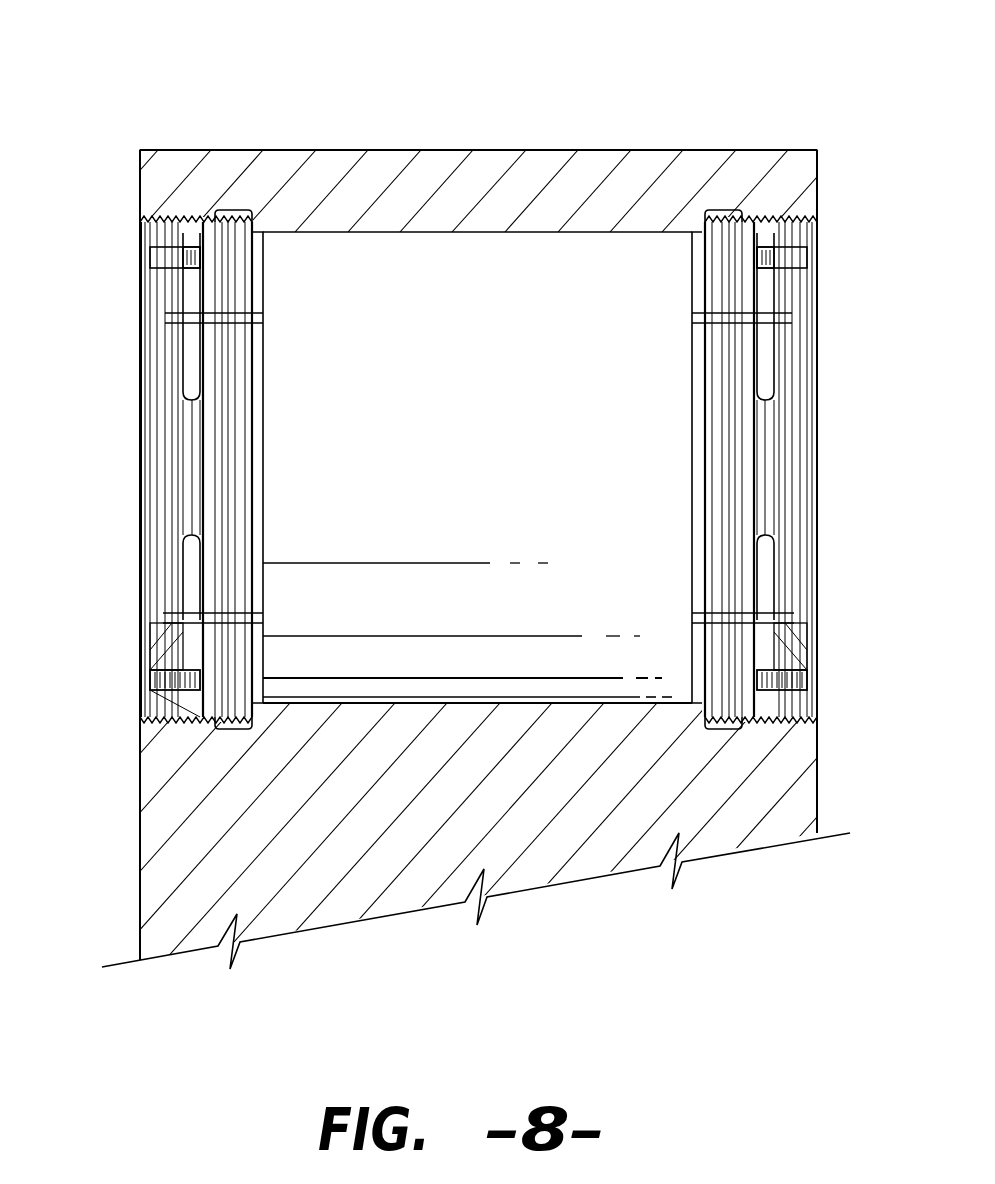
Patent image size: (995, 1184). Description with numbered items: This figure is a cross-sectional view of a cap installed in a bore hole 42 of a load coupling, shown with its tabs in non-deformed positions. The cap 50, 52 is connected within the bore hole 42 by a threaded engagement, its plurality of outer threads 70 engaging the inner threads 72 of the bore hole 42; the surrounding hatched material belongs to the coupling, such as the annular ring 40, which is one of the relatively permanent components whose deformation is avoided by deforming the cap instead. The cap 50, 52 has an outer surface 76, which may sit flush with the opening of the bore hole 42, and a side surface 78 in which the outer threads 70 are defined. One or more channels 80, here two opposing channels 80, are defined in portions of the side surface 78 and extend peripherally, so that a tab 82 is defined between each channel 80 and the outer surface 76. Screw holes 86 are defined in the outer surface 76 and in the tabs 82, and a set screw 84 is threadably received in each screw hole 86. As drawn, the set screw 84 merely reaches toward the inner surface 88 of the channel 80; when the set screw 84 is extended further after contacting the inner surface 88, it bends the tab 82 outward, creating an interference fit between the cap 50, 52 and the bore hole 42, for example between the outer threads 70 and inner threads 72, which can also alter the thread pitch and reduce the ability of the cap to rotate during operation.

The annular ring 40 is at (352, 100).
The bore hole 42 is at (498, 283).
The cap 50 is at (150, 402).
The second cap 52 is at (835, 345).
The outer threads 70 is at (165, 212).
The inner threads 72 is at (228, 220).
The outer surface 76 is at (140, 462).
The side surface 78 is at (210, 723).
The channel 80 is at (193, 578).
The tab 82 is at (158, 613).
The set screw 84 is at (150, 678).
The screw hole 86 is at (165, 662).
The inner surface 88 is at (193, 562).